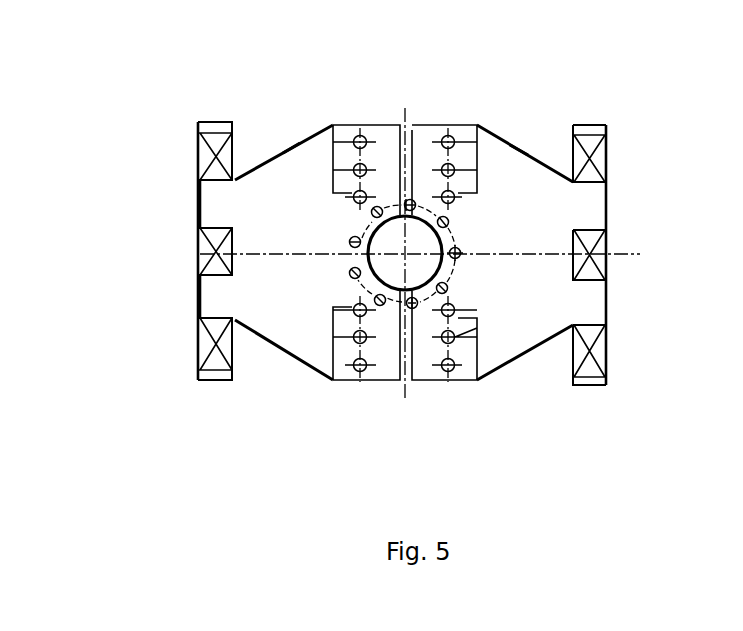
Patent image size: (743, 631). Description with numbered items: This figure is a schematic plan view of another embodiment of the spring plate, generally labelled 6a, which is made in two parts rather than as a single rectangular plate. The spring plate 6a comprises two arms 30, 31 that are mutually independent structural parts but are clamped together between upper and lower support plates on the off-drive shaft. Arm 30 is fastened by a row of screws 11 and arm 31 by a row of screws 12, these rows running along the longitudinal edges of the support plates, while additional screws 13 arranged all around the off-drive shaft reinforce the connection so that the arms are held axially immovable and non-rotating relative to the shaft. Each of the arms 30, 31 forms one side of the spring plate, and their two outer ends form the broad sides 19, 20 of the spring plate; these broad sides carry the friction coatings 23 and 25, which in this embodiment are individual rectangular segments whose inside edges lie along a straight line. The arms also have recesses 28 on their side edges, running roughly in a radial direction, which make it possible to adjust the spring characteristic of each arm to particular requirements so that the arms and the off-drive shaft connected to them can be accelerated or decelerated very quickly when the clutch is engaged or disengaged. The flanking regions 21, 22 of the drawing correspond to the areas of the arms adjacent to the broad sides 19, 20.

The spring plate 6a is at (389, 397).
The row of screws 11 is at (334, 123).
The row of screws 12 is at (482, 125).
The additional screws 13 is at (232, 250).
The broad side 19 is at (198, 207).
The broad side 20 is at (606, 244).
The left wall plate 21 is at (212, 291).
The right side wall 22 is at (590, 199).
The friction coating 23 is at (212, 152).
The friction coating 25 is at (598, 158).
The recesses 28 is at (257, 150).
The arm 30 is at (298, 163).
The arm 31 is at (518, 178).